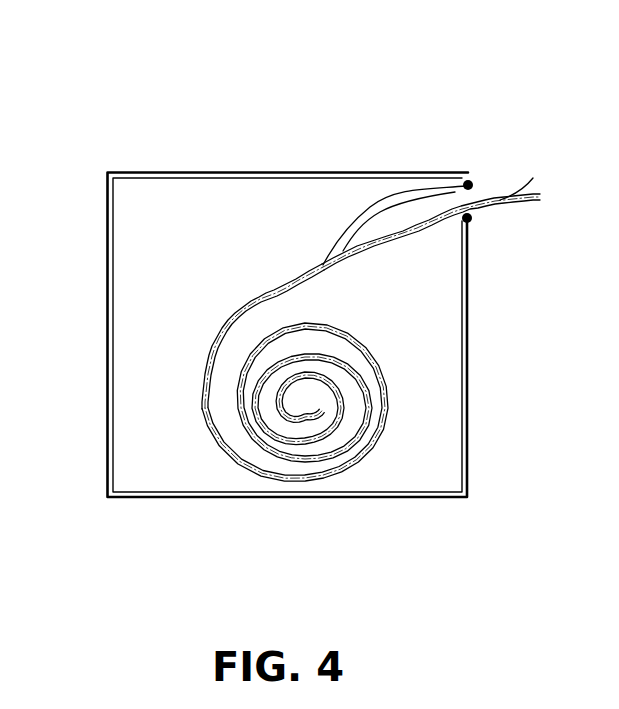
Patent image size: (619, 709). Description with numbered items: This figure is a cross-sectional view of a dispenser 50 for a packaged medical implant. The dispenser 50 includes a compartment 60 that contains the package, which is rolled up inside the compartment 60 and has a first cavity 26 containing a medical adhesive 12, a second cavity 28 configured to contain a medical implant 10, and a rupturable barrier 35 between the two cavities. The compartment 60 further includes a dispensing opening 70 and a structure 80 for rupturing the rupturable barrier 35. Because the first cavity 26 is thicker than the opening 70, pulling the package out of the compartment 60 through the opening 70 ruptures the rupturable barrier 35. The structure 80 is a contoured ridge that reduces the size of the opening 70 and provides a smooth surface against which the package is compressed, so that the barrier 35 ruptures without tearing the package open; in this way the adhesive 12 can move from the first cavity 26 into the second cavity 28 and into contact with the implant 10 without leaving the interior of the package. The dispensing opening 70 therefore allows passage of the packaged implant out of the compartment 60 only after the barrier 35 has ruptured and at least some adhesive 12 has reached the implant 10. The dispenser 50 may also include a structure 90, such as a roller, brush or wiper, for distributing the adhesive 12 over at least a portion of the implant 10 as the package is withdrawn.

The medical implant 10 is at (205, 357).
The medical adhesive 12 is at (412, 218).
The first cavity 26 is at (388, 203).
The second cavity 28 is at (245, 463).
The rupturable barrier 35 is at (309, 277).
The dispenser 50 is at (130, 104).
The compartment 60 is at (233, 178).
The dispensing opening 70 is at (476, 188).
The structure for rupturing the rupturable barrier 80 is at (467, 218).
The structure for distributing the adhesive 90 is at (469, 184).